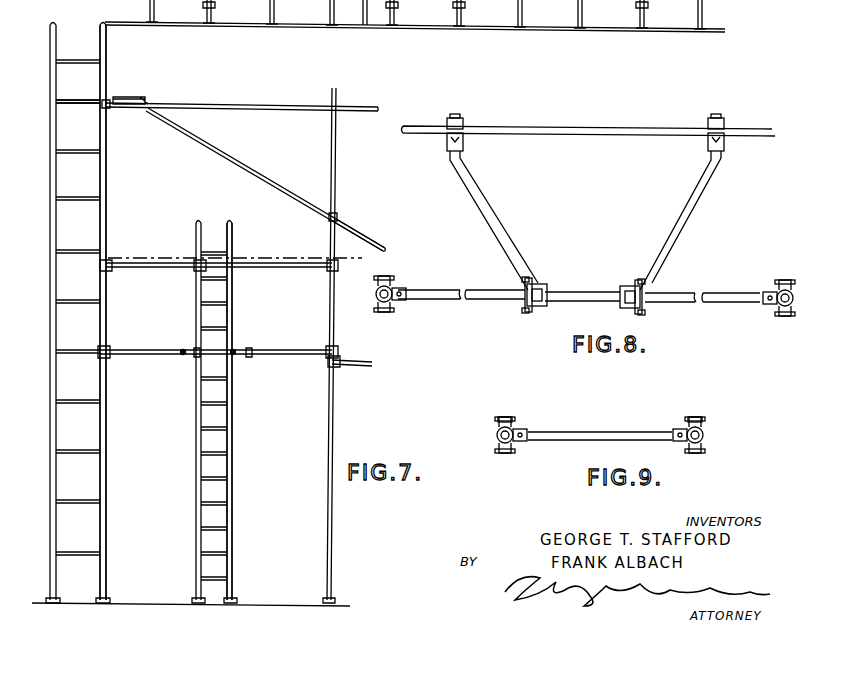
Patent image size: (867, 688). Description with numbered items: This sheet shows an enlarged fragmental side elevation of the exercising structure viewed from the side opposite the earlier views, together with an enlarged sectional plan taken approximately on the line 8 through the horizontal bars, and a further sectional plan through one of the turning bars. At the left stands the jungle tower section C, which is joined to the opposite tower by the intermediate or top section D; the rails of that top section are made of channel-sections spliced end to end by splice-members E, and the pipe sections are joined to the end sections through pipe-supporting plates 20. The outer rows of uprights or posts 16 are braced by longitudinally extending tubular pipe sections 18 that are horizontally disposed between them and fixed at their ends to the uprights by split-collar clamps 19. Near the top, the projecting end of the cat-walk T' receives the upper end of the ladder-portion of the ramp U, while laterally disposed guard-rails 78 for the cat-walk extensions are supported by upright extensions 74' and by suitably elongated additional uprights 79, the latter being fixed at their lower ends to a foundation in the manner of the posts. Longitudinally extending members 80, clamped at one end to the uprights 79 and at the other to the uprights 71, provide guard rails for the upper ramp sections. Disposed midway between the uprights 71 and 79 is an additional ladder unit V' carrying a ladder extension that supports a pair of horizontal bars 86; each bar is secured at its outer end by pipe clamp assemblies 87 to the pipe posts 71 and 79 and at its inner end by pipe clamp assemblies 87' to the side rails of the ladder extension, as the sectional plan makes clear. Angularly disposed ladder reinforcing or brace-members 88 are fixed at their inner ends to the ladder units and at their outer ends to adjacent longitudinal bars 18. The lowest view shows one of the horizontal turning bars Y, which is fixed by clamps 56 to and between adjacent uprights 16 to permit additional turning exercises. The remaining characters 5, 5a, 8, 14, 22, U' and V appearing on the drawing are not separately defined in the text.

In FIG. 7, the ladder rung 5 is at (68, 450).
In FIG. 7, the ladder rung 5a is at (72, 112).
In FIG. 7, the section line 8- 8 is at (88, 234).
In FIG. 7, the ladder end frame 14 is at (50, 30).
In FIG. 9, the uprights or posts 16 is at (492, 436).
In FIG. 7, the tubular pipe sections 18 is at (288, 364).
In FIG. 8, the tubular pipe sections 18 is at (600, 150).
In FIG. 7, the clamps 19 is at (336, 362).
In FIG. 7, the pipe-supporting plates 20 is at (108, 352).
In FIG. 7, the deck post 22 is at (640, 8).
In FIG. 9, the clamps 56 is at (520, 420).
In FIG. 7, the uprights 71 is at (331, 411).
In FIG. 8, the uprights 71 is at (798, 312).
In FIG. 7, the upright extensions 74' is at (122, 162).
In FIG. 7, the guard-rails 78 is at (108, 78).
In FIG. 7, the uprights or posts 79 is at (106, 420).
In FIG. 8, the uprights or posts 79 is at (374, 293).
In FIG. 7, the longitudinally extending members 80 is at (290, 104).
In FIG. 7, the horizontal bars 86 is at (280, 262).
In FIG. 8, the horizontal bars 86 is at (450, 312).
In FIG. 7, the pipe clamp assemblies 87 is at (219, 280).
In FIG. 8, the pipe clamp assemblies 87 is at (584, 297).
In FIG. 7, the pipe clamp assemblies 87' is at (189, 270).
In FIG. 8, the pipe clamp assemblies 87' is at (600, 314).
In FIG. 7, the ladder reinforcing or brace-members 88 is at (184, 357).
In FIG. 8, the ladder reinforcing or brace-members 88 is at (660, 236).
In FIG. 7, the jungle tower section C is at (92, 176).
In FIG. 7, the intermediate or top section D is at (346, 104).
In FIG. 7, the splice-members E is at (82, 344).
In FIG. 7, the cat-walk T' is at (144, 84).
In FIG. 7, the ramp U is at (358, 226).
In FIG. 7, the diagonal brace U' is at (265, 179).
In FIG. 7, the vertical member V is at (244, 411).
In FIG. 8, the vertical member V is at (580, 273).
In FIG. 7, the ladder unit V' is at (228, 412).
In FIG. 9, the horizontal turning bars Y is at (588, 430).